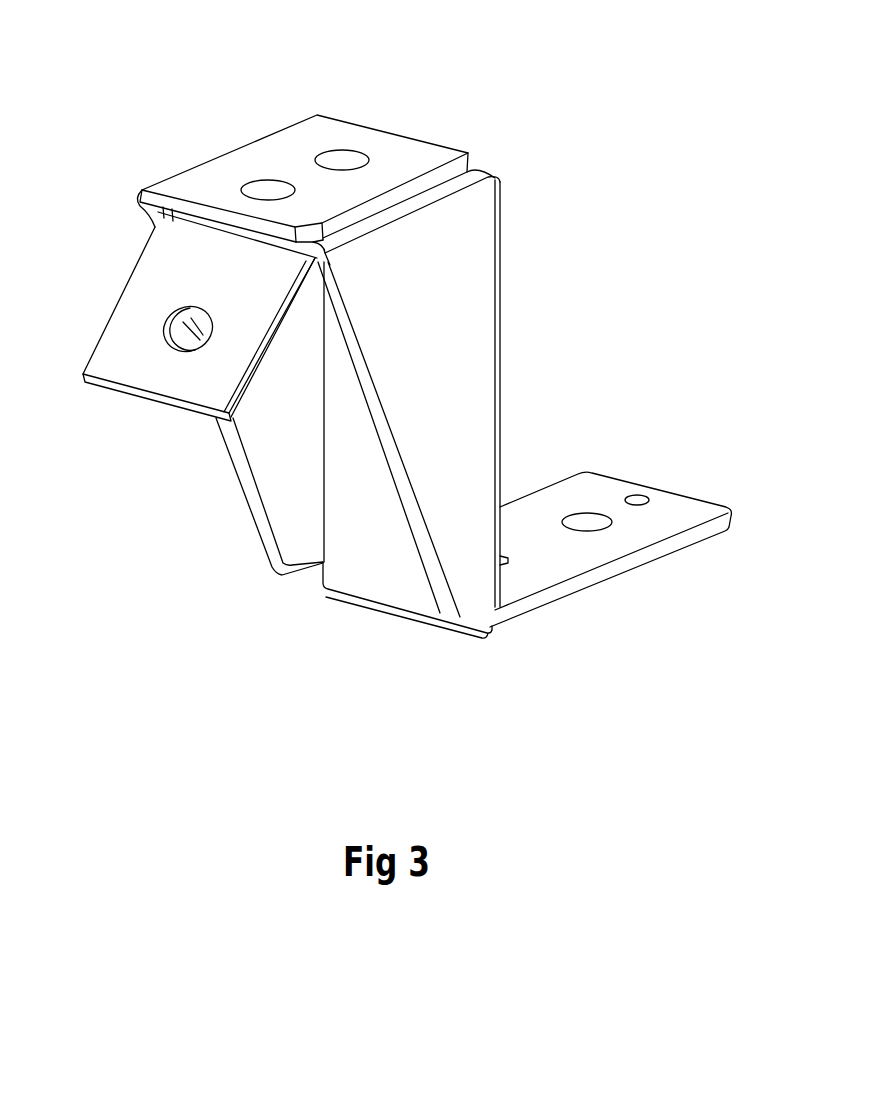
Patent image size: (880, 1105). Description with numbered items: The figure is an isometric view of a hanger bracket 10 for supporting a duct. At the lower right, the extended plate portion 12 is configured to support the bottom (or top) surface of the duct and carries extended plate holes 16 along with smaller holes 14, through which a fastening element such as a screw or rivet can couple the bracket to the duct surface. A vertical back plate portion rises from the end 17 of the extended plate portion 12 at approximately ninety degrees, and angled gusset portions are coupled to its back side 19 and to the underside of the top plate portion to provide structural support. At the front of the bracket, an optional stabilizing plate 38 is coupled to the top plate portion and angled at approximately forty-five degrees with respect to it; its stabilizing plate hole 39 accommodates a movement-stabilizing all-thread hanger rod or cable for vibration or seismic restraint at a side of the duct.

The hanger bracket 10 is at (302, 121).
The extended plate portion 12 is at (607, 582).
The smaller holes 14 is at (637, 500).
The holes 16 is at (588, 522).
The end of the extended plate portion 17 is at (538, 590).
The back side of vertical back plate portion 19 is at (412, 617).
The stabilizing plate 38 is at (160, 403).
The stabilizing plate holes 39 is at (173, 315).